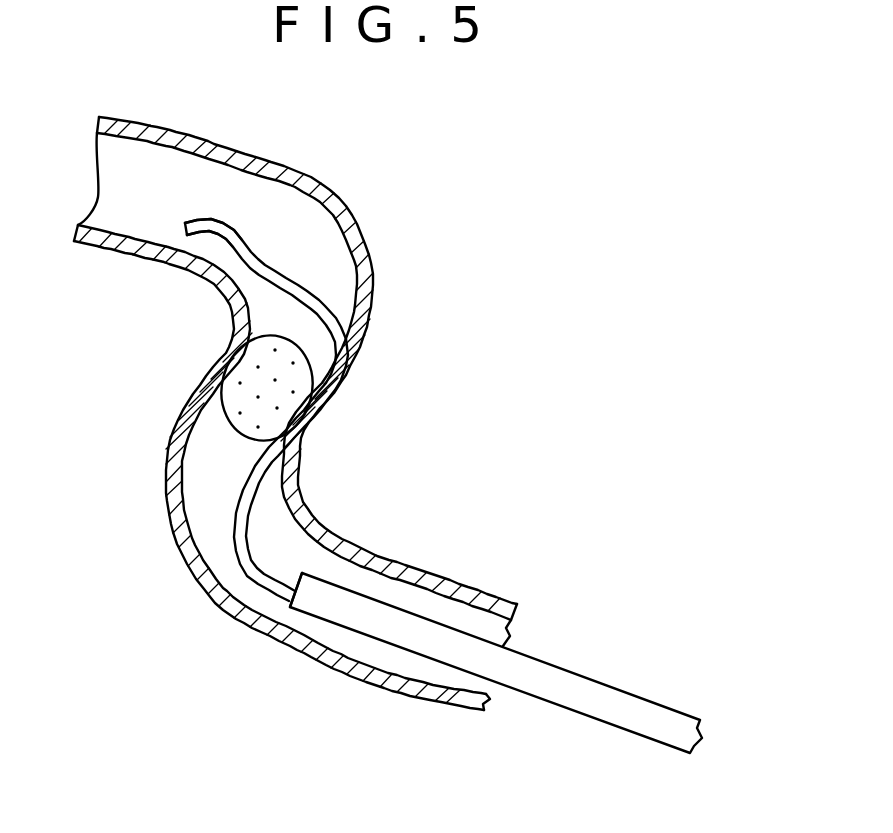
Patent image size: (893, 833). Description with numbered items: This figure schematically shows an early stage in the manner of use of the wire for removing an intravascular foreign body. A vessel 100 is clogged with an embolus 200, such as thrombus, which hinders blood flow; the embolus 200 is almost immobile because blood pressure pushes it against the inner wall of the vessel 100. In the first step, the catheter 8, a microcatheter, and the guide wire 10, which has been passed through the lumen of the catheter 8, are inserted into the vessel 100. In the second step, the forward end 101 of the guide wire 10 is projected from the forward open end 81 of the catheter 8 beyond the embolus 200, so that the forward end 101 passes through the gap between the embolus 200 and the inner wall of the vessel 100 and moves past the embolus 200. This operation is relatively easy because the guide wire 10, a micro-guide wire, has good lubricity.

The vessel 100 is at (372, 282).
The forward end of the guide wire 101 is at (262, 262).
The guide wire 10 is at (227, 535).
The embolus 200 is at (253, 382).
The catheter 8 is at (533, 695).
The forward open end of the catheter 81 is at (293, 598).